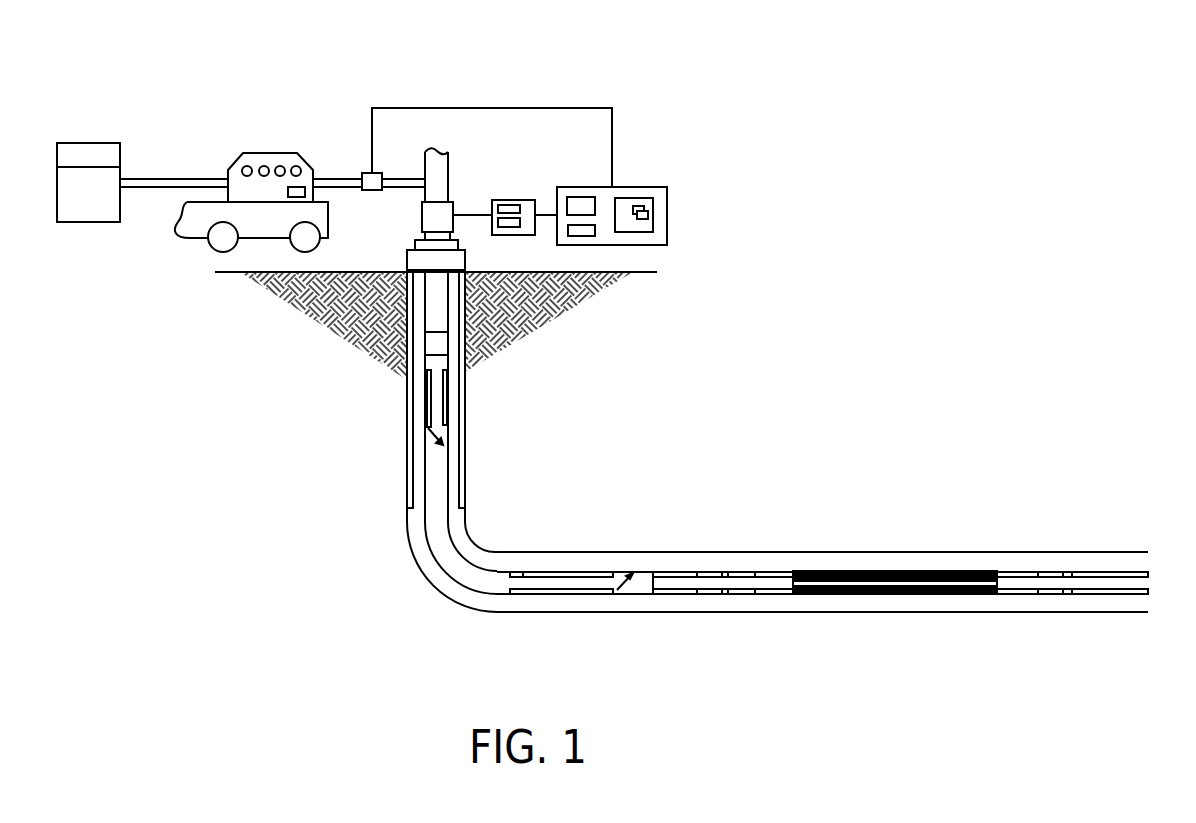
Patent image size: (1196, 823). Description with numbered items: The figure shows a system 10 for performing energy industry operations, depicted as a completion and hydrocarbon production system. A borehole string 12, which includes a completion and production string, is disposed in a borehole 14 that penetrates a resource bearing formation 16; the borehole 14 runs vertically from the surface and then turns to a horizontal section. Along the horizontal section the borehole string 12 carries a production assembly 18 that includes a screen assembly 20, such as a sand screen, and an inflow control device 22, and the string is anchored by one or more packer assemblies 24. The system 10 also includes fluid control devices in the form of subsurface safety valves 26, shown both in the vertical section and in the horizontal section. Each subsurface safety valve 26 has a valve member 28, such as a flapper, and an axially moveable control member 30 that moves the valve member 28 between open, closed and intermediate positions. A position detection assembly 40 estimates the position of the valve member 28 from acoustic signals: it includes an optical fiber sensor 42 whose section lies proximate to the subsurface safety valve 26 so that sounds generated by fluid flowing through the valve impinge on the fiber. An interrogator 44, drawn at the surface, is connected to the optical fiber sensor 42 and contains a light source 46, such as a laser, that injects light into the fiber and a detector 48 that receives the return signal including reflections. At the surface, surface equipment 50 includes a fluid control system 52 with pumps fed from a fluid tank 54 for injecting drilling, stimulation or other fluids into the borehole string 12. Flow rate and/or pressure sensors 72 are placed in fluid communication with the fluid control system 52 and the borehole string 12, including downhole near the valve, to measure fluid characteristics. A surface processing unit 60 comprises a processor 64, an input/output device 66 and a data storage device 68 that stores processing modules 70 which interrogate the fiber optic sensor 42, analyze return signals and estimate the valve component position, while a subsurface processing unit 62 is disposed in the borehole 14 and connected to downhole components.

The system 10 is at (792, 176).
The borehole string 12 is at (450, 470).
The borehole 14 is at (470, 543).
The resource bearing formation 16 is at (614, 408).
The production assembly 18 is at (900, 524).
The screen assembly 20 is at (950, 572).
The inflow control device 22 is at (850, 578).
The packer assembly 24 is at (773, 572).
The subsurface safety valve 26 is at (448, 383).
The valve member 28 is at (435, 447).
The control member 30 is at (427, 387).
The position detection assembly 40 is at (467, 631).
The optical fiber sensor 42 is at (428, 425).
The interrogator 44 is at (523, 200).
The light source 46 is at (503, 208).
The detector 48 is at (508, 225).
The surface equipment 50 is at (345, 98).
The fluid control system 52 is at (270, 155).
The fluid tank 54 is at (90, 175).
The surface processing unit 60 is at (623, 187).
The subsurface processing unit 62 is at (437, 342).
The processor 64 is at (580, 205).
The input/output device 66 is at (586, 236).
The data storage device 68 is at (643, 198).
The processing modules 70 is at (648, 216).
The flow rate and/or pressure sensors 72 is at (372, 192).